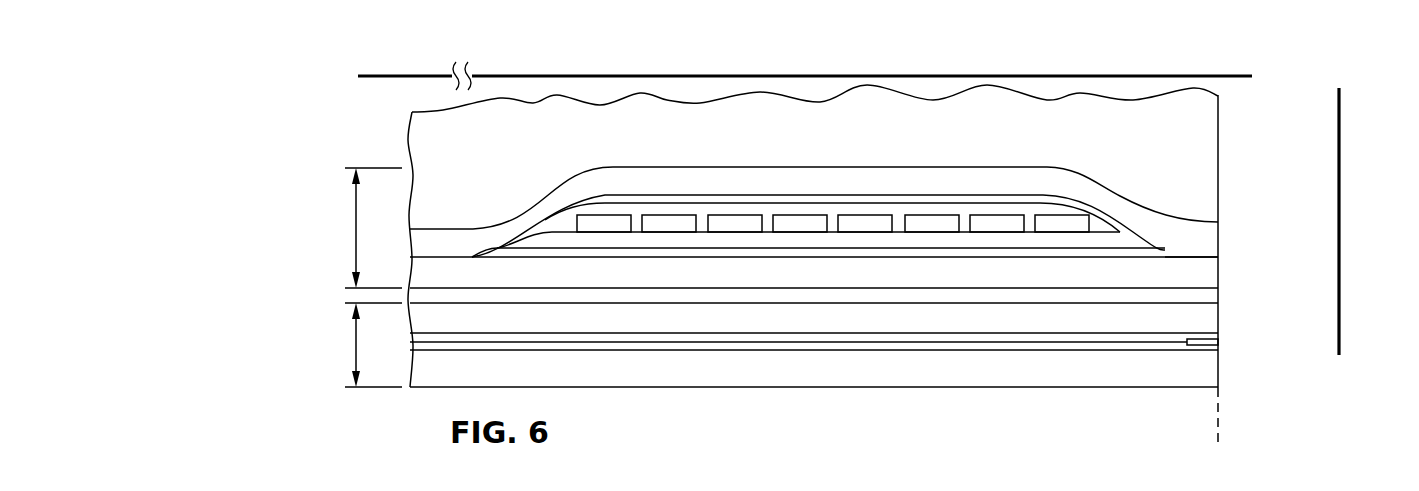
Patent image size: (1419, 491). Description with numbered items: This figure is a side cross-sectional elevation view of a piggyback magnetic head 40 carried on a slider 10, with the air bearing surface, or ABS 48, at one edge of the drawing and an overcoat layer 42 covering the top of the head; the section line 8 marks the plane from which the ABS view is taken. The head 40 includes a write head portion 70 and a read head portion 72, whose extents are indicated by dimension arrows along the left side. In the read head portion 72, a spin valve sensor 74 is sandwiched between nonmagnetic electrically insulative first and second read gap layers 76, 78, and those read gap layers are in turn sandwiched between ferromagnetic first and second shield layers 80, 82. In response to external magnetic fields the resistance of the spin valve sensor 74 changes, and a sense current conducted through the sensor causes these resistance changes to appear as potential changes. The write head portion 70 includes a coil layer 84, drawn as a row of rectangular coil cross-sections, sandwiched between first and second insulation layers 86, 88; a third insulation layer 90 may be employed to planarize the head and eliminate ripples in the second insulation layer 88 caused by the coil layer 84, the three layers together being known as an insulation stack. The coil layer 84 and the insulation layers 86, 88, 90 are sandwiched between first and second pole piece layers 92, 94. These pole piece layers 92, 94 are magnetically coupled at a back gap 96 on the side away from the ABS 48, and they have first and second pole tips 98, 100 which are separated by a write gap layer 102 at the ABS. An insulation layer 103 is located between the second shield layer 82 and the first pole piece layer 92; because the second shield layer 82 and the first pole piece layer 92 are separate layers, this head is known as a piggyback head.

The slider 10 is at (1243, 62).
The piggyback magnetic head 40 is at (386, 118).
The overcoat layer 42 is at (1202, 125).
The write head portion 70 is at (356, 232).
The read head portion 72 is at (356, 350).
The spin valve sensor 74 is at (1218, 343).
The first read gap layer 76 is at (883, 350).
The second read gap layer 78 is at (848, 333).
The first shield layer 80 is at (985, 373).
The second shield layer 82 is at (1088, 322).
The coil layer 84 is at (865, 220).
The first insulation layer 86 is at (770, 242).
The second insulation layer 88 is at (1102, 222).
The third insulation layer 90 is at (641, 200).
The first pole piece layer 92 is at (1140, 277).
The second pole piece layer 94 is at (1000, 180).
The back gap 96 is at (450, 255).
The first pole tip 98 is at (1218, 277).
The second pole tip 100 is at (1210, 232).
The write gap layer 102 is at (1218, 252).
The insulation layer 103 is at (1043, 297).
The air bearing surface ABS 48 is at (1214, 447).
The section line 8- 8 is at (1354, 347).